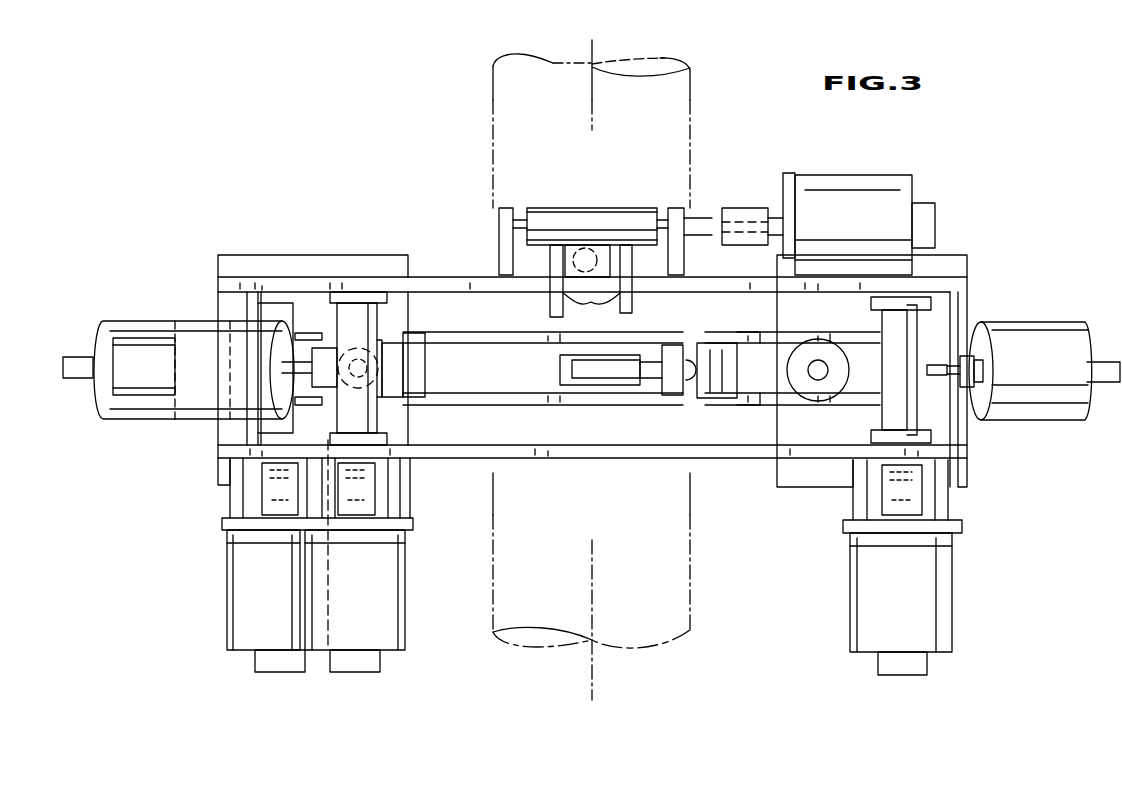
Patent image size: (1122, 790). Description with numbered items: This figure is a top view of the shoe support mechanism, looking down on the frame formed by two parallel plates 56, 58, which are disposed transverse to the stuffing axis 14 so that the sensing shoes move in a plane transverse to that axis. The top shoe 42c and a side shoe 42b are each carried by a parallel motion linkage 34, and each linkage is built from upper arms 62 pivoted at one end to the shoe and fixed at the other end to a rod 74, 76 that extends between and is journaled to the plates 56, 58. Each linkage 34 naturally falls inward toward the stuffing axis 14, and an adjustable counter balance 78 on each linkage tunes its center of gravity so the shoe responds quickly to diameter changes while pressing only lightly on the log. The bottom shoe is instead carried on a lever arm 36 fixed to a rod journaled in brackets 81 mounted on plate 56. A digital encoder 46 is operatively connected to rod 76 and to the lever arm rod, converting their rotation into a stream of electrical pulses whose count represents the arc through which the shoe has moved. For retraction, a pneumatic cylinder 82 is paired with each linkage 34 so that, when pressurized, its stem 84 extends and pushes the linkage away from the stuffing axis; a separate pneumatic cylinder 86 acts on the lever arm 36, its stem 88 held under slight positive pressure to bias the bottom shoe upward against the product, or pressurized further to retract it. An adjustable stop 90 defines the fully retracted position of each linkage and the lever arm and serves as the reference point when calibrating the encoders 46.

The stuffing axis 14 is at (594, 675).
The parallel motion linkage 34 is at (485, 324).
The lever arm 36 is at (591, 312).
The shoe 42b is at (688, 390).
The shoe 42c is at (605, 385).
The digital encoder 46 is at (880, 185).
The plate 56 is at (737, 276).
The plate 58 is at (627, 460).
The upper arm 62 is at (318, 332).
The rod 74 is at (358, 300).
The rod 76 is at (235, 470).
The adjustable counter balance 78 is at (120, 328).
The bracket 81 is at (505, 212).
The pneumatic cylinder 82 is at (122, 378).
The stem 84 is at (395, 368).
The pneumatic cylinder 86 is at (616, 252).
The stem 88 is at (590, 250).
The adjustable stop 90 is at (938, 372).